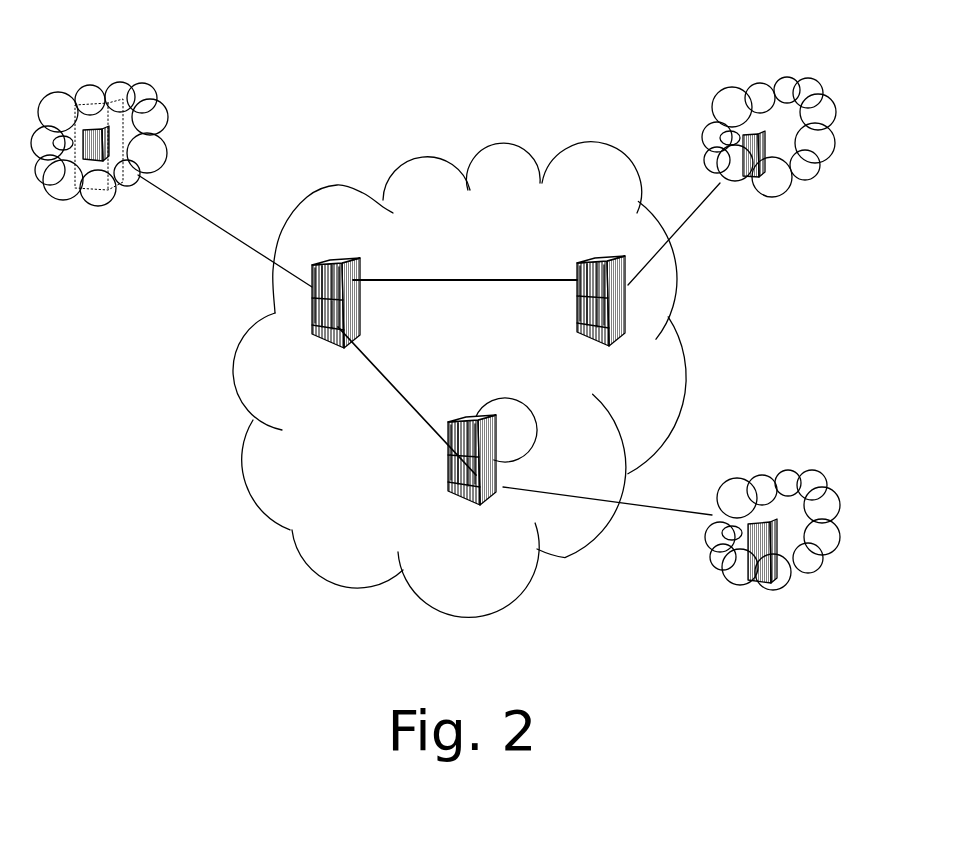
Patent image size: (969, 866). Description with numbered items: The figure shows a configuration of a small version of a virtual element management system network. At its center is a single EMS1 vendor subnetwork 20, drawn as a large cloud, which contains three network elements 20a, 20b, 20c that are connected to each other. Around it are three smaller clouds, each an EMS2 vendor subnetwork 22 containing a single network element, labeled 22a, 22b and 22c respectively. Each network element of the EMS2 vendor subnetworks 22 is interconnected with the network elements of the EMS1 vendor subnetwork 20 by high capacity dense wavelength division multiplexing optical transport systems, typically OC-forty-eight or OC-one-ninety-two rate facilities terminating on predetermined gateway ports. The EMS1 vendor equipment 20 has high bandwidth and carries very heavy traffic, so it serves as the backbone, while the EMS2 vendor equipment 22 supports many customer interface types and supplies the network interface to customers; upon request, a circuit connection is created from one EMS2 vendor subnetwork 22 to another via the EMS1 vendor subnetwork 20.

The EMS1 vendor subnetwork 20 is at (608, 177).
The network element 20a is at (335, 327).
The network element 20b is at (590, 330).
The network element 20c is at (465, 498).
The EMS2 vendor subnetwork 22 is at (120, 110).
The network element 22a is at (763, 177).
The network element 22b is at (758, 560).
The network element 22c is at (103, 153).